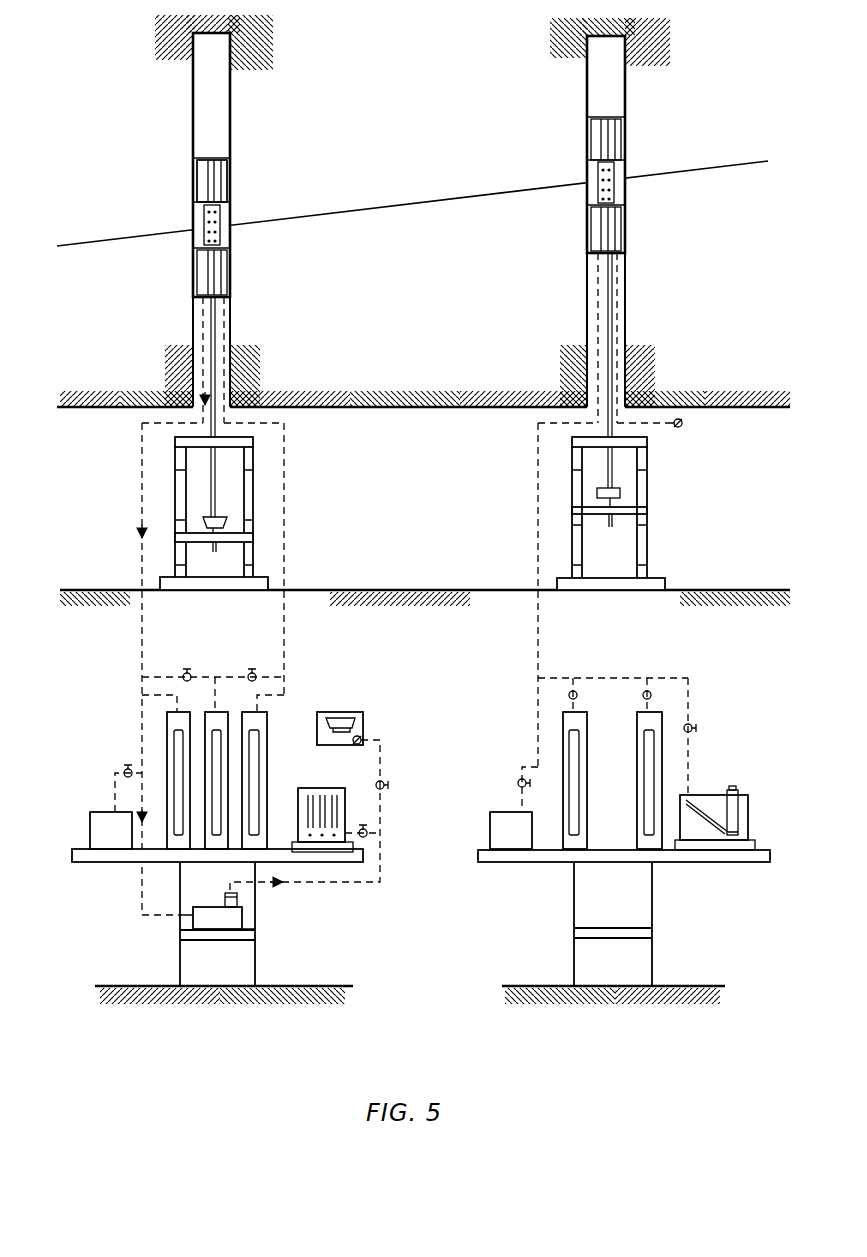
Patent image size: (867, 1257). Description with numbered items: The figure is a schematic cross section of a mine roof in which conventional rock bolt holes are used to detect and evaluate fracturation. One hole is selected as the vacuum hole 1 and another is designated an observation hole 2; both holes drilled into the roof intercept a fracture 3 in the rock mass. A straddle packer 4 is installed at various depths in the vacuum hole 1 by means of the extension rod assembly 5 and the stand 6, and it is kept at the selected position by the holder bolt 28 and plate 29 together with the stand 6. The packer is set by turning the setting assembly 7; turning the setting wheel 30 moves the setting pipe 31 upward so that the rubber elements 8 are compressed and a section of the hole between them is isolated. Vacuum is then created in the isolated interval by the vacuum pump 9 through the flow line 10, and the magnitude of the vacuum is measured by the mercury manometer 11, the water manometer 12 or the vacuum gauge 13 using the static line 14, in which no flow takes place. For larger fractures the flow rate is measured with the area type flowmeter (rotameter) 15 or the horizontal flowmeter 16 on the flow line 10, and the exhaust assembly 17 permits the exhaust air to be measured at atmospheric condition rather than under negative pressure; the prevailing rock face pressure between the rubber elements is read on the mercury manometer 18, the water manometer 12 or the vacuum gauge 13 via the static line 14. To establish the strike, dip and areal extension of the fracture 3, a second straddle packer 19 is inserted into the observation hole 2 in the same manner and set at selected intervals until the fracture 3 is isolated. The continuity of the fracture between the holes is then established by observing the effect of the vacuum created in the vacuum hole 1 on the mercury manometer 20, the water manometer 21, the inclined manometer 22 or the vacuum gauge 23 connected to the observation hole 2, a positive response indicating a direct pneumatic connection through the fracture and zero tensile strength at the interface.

The vacuum hole 1 is at (193, 88).
The observation hole 2 is at (587, 85).
The fracture 3 is at (353, 212).
The straddle packer 4 is at (193, 165).
The extension rod assembly 5 is at (218, 325).
The stand 6 is at (253, 524).
The setting assembly 7 is at (236, 507).
The rubber elements 8 is at (203, 188).
The vacuum pump 9 is at (242, 922).
The flow line 10 is at (142, 482).
The mercury manometer 11 is at (175, 710).
The water manometer 12 is at (220, 712).
The vacuum gauge 13 is at (100, 812).
The static line 14 is at (284, 457).
The area type flowmeter (rotameter) 15 is at (321, 788).
The horizontal flowmeter 16 is at (363, 718).
The exhaust assembly 17 is at (237, 900).
The mercury manometer 18 is at (265, 712).
The straddle packer 19 is at (587, 152).
The mercury manometer 20 is at (583, 712).
The water manometer 21 is at (658, 712).
The inclined manometer 22 is at (710, 795).
The vacuum gauge 23 is at (512, 812).
The holder bolt 28 is at (216, 555).
The plate 29 is at (180, 553).
The setting wheel 30 is at (203, 522).
The setting pipe 31 is at (215, 478).